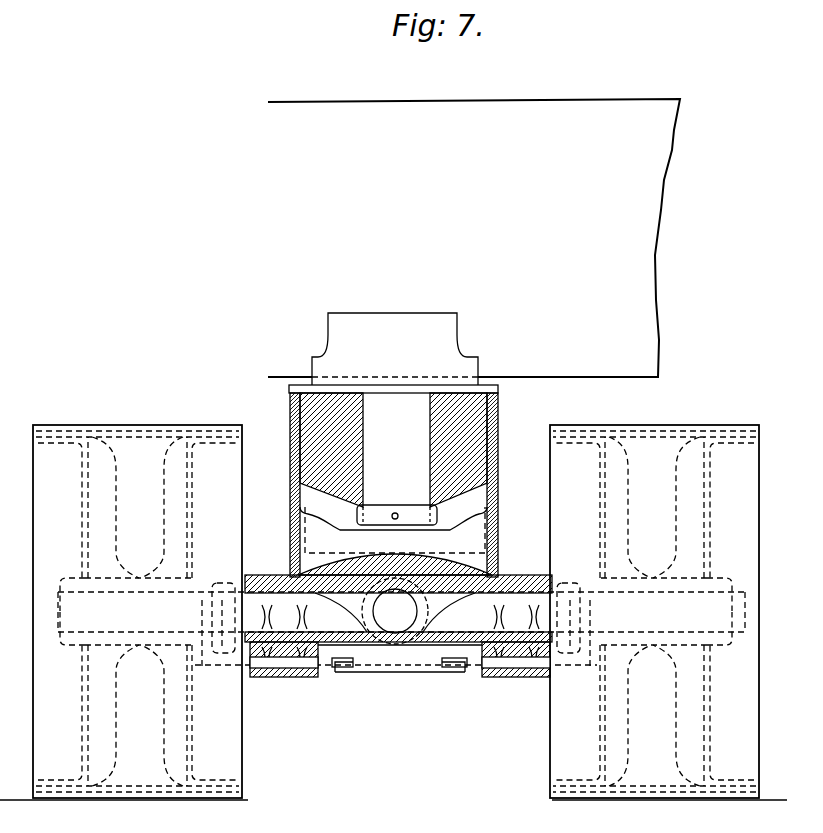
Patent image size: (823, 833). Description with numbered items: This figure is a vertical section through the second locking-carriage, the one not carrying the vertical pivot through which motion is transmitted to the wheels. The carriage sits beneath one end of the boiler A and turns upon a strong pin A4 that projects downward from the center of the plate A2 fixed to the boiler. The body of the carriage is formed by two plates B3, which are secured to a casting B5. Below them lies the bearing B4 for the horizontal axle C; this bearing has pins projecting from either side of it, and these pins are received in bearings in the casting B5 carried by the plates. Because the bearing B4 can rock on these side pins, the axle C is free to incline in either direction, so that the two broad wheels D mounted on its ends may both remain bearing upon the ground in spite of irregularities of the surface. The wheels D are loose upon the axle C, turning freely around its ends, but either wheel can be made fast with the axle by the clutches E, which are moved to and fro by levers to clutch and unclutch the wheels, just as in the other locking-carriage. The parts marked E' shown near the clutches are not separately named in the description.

The boiler A is at (474, 242).
The plate A2 is at (289, 393).
The strong pin A4 is at (393, 461).
The plates B3 is at (392, 485).
The bearing B4 is at (398, 571).
The casting B5 is at (394, 530).
The horizontal axle C is at (398, 627).
The broad wheels D is at (396, 600).
The clutches E is at (401, 651).
The axle clips E' is at (399, 680).